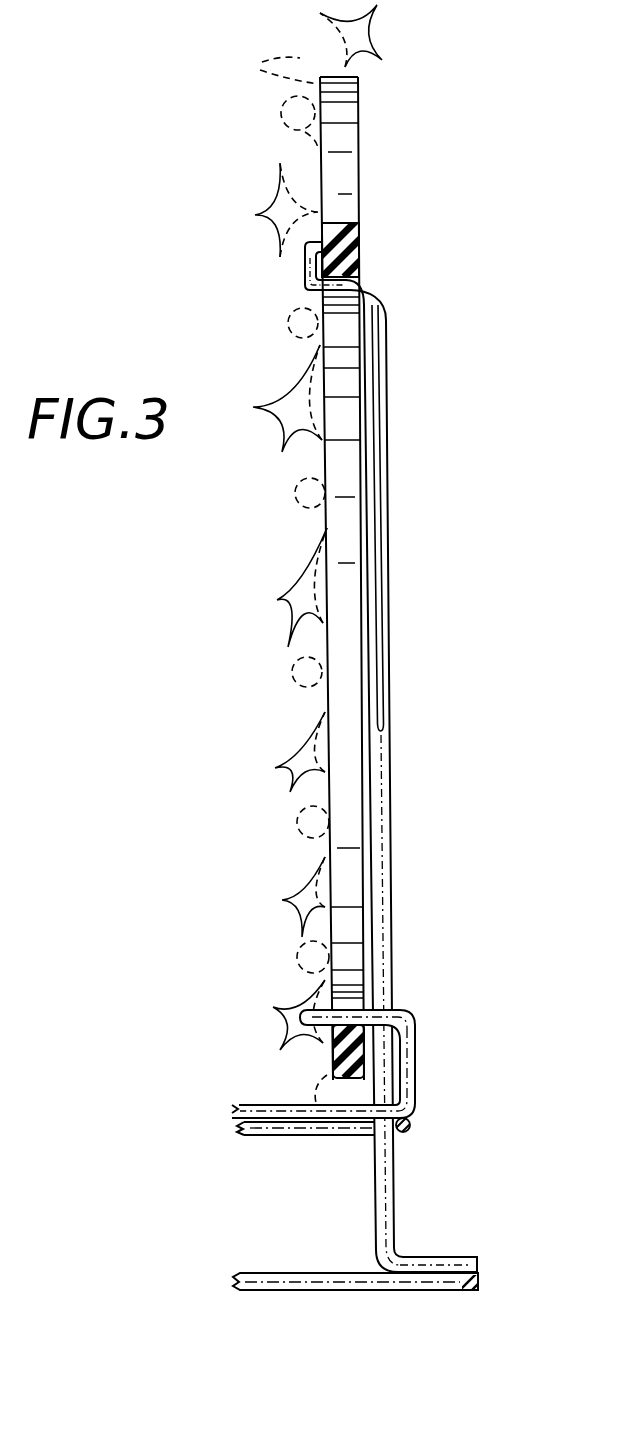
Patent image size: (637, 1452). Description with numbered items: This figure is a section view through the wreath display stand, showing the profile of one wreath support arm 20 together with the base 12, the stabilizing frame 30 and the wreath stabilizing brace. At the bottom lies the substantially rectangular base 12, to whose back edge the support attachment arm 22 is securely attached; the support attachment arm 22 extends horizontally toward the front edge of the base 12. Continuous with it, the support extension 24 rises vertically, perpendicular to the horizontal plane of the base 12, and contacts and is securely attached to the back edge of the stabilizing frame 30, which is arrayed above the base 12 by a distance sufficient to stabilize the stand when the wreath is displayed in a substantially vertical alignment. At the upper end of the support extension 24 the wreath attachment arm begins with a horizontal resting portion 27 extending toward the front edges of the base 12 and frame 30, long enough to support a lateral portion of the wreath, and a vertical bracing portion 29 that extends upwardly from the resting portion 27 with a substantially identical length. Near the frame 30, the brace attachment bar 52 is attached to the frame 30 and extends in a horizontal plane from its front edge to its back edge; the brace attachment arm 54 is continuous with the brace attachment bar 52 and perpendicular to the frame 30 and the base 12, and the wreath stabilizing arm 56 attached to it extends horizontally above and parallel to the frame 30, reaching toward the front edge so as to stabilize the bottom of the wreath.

The base 12 is at (432, 1292).
The wreath support arm 20 is at (382, 747).
The support attachment arm 22 is at (438, 1257).
The support extension 24 is at (392, 566).
The horizontal resting portion 27 is at (357, 270).
The vertical bracing portion 29 is at (345, 240).
The stabilizing frame 30 is at (318, 1138).
The brace attachment bar 52 is at (410, 1118).
The brace attachment arm 54 is at (356, 1028).
The wreath stabilizing arm 56 is at (388, 1008).